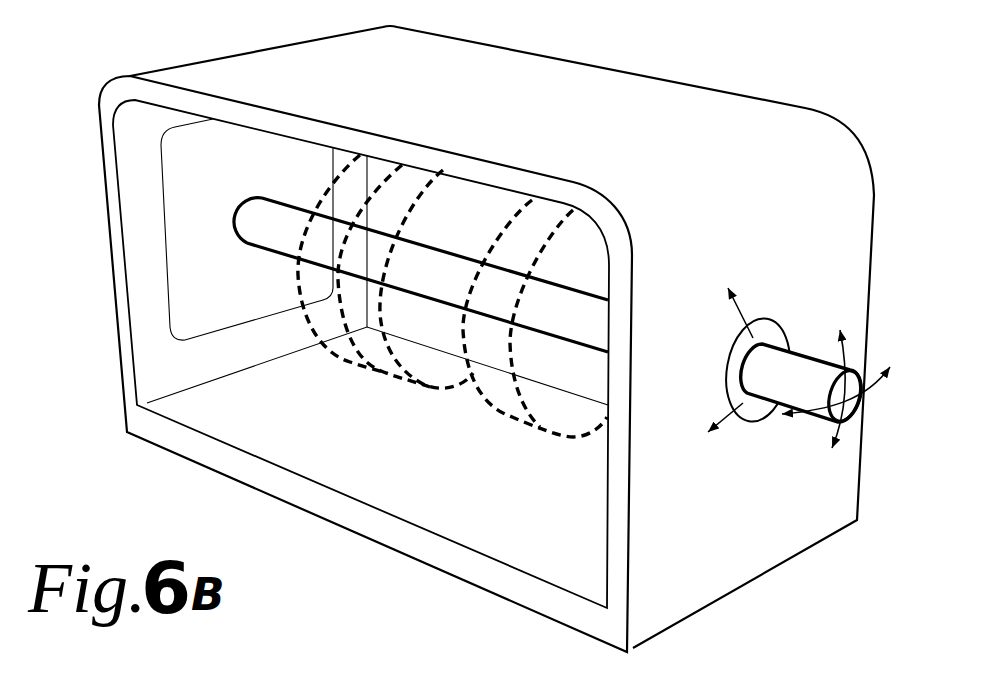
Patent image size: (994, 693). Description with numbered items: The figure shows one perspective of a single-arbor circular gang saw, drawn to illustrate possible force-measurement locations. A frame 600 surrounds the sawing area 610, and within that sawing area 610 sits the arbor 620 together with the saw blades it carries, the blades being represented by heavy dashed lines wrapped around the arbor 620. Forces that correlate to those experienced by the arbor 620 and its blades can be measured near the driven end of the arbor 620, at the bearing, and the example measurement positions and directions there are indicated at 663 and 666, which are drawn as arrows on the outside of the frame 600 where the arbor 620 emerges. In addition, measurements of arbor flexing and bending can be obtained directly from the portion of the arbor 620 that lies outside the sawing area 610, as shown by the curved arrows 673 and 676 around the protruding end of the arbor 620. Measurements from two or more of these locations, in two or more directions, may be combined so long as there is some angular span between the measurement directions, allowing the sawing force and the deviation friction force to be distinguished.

The frame 600 is at (581, 111).
The sawing area 610 is at (311, 399).
The arbor 620 is at (257, 208).
The measurement position and direction 663 is at (740, 312).
The measurement position and direction 666 is at (730, 414).
The arrow 673 is at (882, 377).
The arrow 676 is at (833, 440).